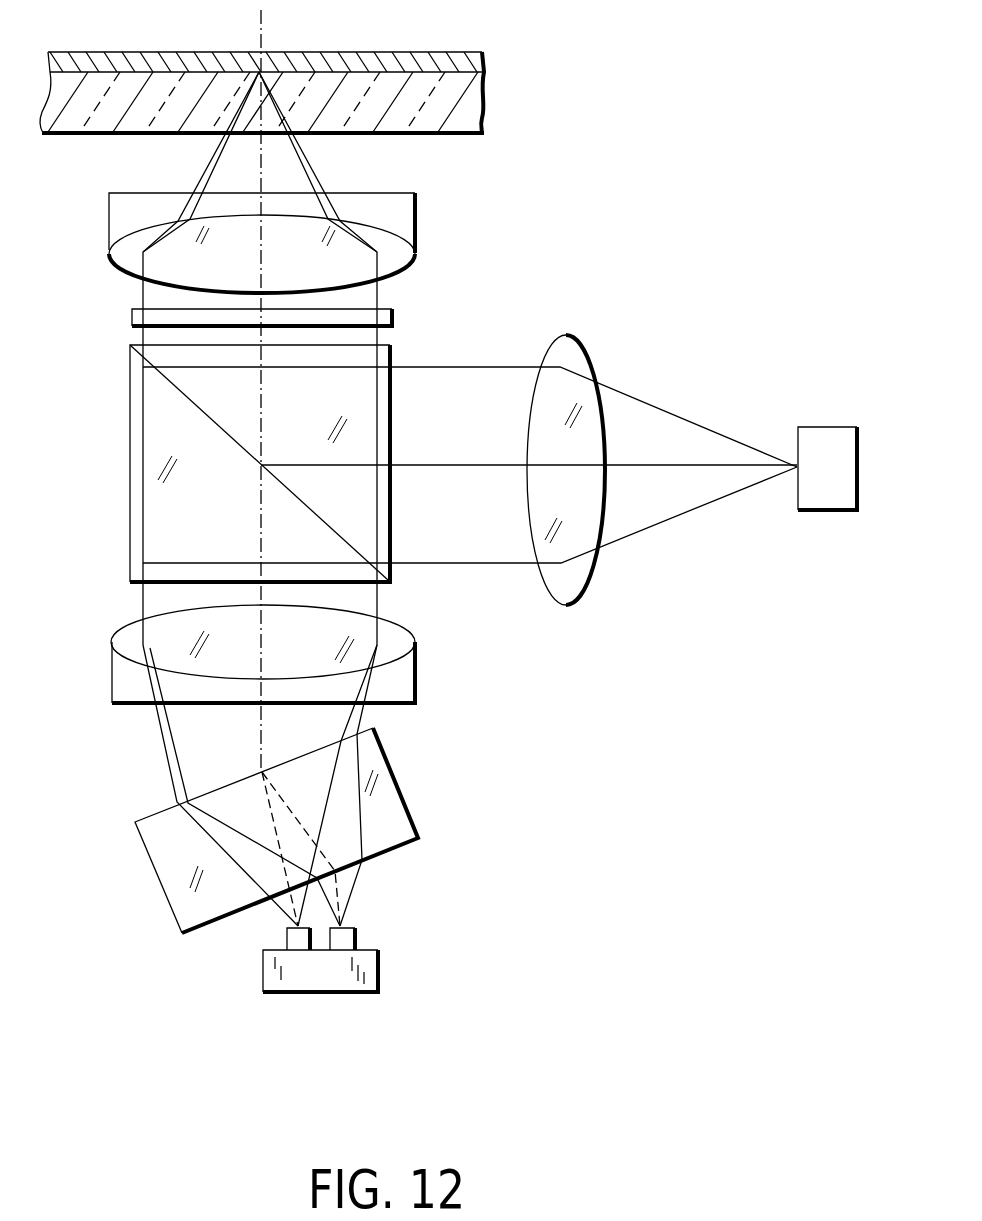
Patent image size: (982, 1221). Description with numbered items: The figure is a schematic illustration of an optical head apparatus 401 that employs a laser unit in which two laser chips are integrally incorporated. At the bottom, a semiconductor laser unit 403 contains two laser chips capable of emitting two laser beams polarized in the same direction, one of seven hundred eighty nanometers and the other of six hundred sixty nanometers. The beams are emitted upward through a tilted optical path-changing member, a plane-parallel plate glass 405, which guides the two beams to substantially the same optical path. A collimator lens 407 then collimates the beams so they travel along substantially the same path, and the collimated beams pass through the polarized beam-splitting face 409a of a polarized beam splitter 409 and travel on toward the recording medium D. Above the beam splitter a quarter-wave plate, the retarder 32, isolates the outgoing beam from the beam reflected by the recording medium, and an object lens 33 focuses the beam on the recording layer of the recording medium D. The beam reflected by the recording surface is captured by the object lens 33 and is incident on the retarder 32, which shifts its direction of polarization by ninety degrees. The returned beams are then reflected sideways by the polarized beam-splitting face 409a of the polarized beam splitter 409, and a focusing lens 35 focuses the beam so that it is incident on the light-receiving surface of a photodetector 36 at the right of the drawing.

The optical head apparatus 401 is at (636, 183).
The recording medium D is at (488, 100).
The object lens 33 is at (111, 211).
The λ/4 plate (retarder) 32 is at (132, 313).
The polarized beam splitter 409 is at (390, 352).
The polarized beam-splitting face 409a is at (340, 536).
The focusing lens 35 is at (562, 593).
The photodetector 36 is at (818, 505).
The collimator lens 407 is at (402, 643).
The optical path-changing member (plane-parallel plate glass) 405 is at (400, 807).
The semiconductor laser unit 403 is at (372, 968).